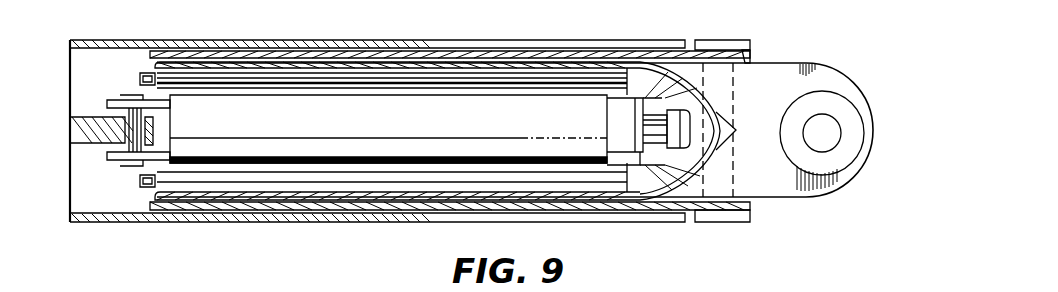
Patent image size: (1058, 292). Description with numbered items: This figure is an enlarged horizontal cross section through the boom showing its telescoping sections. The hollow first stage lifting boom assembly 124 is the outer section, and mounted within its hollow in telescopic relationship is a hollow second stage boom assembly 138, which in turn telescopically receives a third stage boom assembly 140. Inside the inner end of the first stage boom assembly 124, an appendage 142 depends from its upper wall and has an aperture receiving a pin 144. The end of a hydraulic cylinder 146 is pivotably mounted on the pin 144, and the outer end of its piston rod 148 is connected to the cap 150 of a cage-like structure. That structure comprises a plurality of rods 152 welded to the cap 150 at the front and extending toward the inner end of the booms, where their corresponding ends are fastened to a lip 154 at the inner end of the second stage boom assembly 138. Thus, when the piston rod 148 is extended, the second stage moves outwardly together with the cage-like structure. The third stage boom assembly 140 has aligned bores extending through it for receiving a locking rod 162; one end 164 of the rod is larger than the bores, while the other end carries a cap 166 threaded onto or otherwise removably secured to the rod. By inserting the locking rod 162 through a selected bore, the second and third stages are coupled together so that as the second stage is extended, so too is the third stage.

The first stage lifting boom assembly 124 is at (272, 40).
The second stage boom assembly 138 is at (688, 47).
The third stage boom assembly 140 is at (788, 63).
The appendage 142 is at (100, 132).
The pin 144 is at (112, 145).
The hydraulic cylinder 146 is at (200, 147).
The piston rod 148 is at (617, 120).
The cap 150 is at (648, 168).
The rods 152 is at (420, 80).
The lip 154 is at (146, 66).
The locking rod 162 is at (730, 167).
The end of locking rod 164 is at (748, 221).
The cap 166 is at (742, 44).